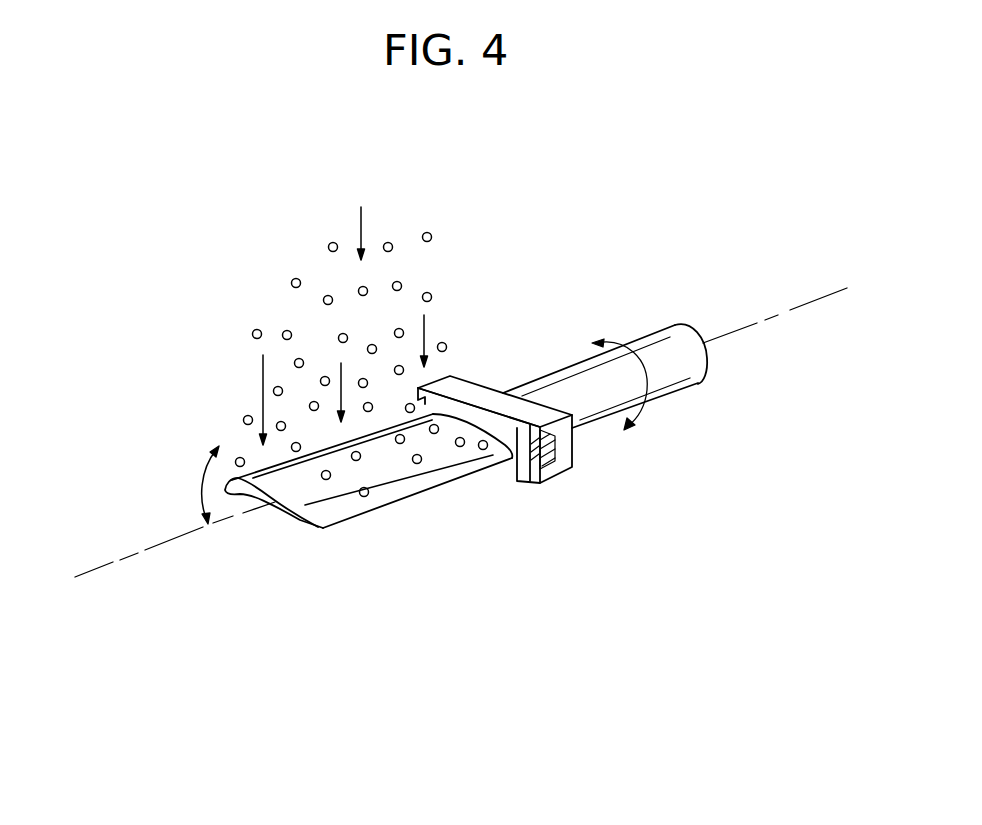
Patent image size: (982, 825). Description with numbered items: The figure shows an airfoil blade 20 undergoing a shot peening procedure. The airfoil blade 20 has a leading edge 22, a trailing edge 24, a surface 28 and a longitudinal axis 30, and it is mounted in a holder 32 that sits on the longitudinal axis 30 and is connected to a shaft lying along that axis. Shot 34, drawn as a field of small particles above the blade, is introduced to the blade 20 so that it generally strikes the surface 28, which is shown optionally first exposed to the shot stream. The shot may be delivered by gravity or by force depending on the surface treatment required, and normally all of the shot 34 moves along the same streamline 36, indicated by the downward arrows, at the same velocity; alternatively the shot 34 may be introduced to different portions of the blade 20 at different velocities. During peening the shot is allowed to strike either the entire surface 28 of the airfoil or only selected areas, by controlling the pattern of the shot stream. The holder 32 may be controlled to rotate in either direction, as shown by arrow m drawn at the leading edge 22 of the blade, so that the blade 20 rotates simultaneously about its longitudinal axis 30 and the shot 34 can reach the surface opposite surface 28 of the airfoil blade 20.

The airfoil blade 20 is at (318, 530).
The leading edge 22 is at (225, 530).
The trailing edge 24 is at (360, 520).
The surface 28 is at (376, 469).
The longitudinal axis 30 is at (170, 543).
The holder 32 is at (567, 448).
The shot 34 is at (402, 283).
The streamline 36 is at (263, 373).
The arrow m is at (205, 483).